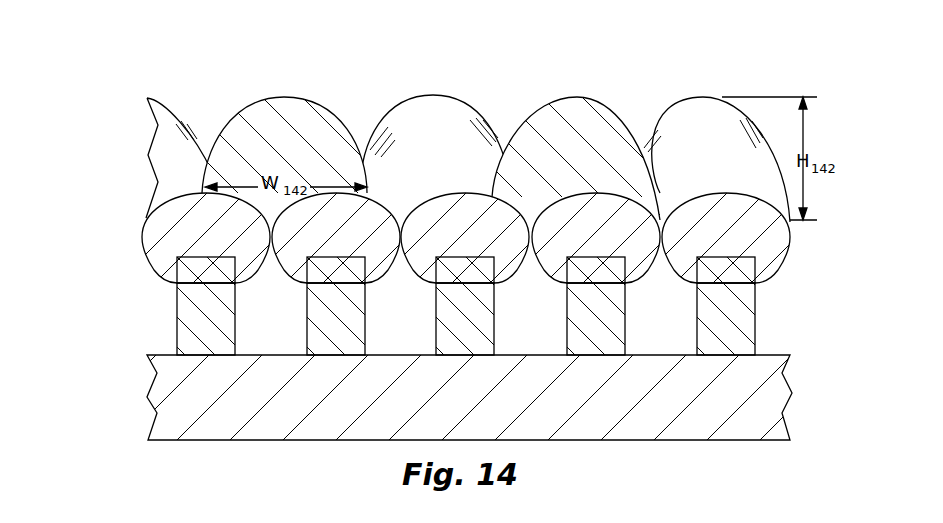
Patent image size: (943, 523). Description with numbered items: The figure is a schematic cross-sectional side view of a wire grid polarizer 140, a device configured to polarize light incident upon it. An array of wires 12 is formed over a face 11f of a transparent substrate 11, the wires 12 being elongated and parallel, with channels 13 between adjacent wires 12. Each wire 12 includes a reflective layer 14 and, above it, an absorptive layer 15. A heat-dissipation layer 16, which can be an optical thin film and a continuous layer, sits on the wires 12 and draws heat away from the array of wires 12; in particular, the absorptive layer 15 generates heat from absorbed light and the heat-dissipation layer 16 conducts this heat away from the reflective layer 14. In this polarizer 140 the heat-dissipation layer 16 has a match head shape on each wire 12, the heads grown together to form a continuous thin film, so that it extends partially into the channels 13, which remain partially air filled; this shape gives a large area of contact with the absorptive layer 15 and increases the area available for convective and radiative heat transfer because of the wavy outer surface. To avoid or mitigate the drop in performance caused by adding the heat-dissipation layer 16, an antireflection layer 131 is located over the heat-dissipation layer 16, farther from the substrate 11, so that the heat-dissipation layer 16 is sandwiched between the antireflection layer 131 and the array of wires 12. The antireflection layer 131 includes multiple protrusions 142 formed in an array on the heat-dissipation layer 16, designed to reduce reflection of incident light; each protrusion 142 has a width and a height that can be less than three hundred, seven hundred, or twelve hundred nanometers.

The protrusions 142 is at (163, 171).
The heat-dissipation layer 16 is at (215, 234).
The absorptive layer 15 is at (215, 279).
The reflective layer 14 is at (215, 331).
The channels 13 is at (466, 319).
The transparent substrate 11 is at (475, 406).
The face of the transparent substrate 11f is at (163, 353).
The wires 12 is at (128, 292).
The antireflection layer 131 is at (110, 157).
The wire grid polarizer 140 is at (88, 380).